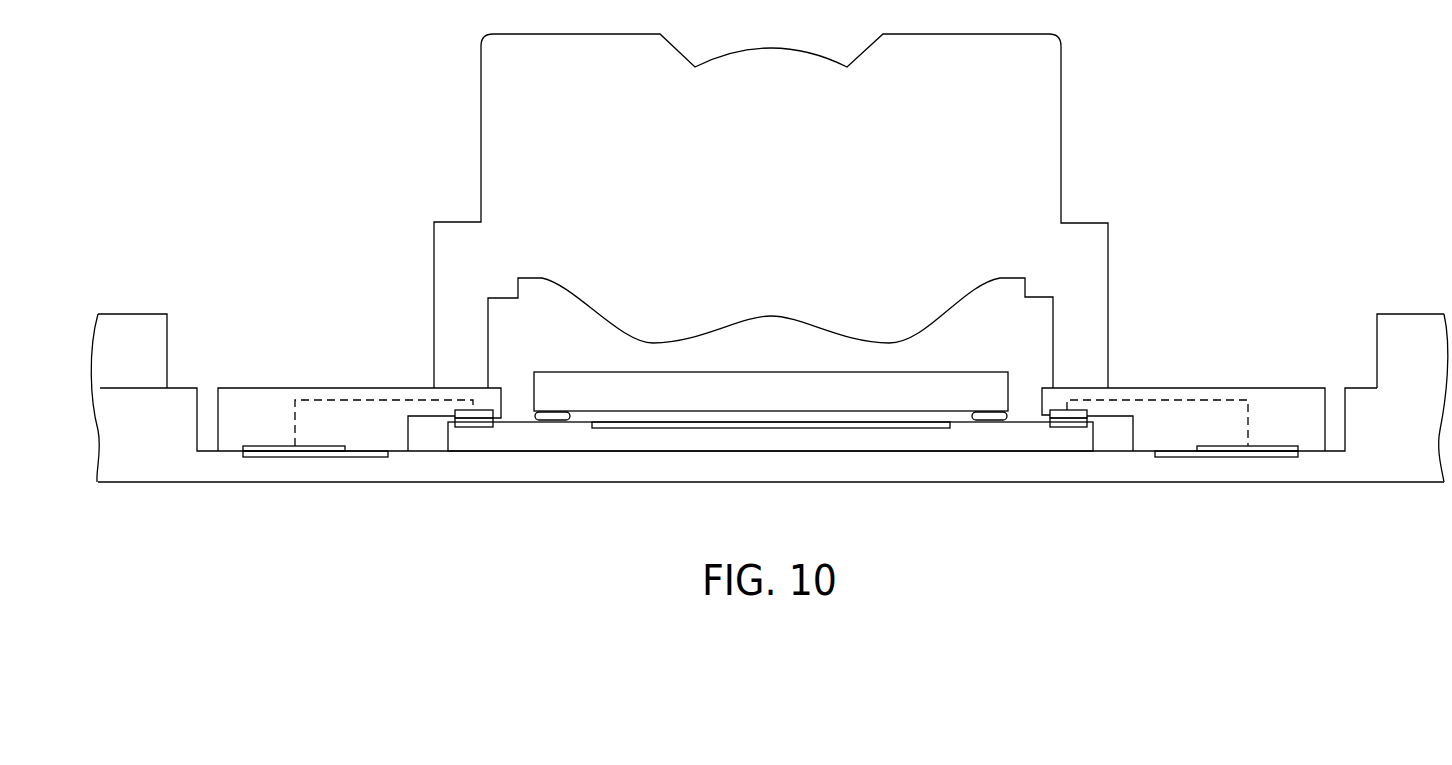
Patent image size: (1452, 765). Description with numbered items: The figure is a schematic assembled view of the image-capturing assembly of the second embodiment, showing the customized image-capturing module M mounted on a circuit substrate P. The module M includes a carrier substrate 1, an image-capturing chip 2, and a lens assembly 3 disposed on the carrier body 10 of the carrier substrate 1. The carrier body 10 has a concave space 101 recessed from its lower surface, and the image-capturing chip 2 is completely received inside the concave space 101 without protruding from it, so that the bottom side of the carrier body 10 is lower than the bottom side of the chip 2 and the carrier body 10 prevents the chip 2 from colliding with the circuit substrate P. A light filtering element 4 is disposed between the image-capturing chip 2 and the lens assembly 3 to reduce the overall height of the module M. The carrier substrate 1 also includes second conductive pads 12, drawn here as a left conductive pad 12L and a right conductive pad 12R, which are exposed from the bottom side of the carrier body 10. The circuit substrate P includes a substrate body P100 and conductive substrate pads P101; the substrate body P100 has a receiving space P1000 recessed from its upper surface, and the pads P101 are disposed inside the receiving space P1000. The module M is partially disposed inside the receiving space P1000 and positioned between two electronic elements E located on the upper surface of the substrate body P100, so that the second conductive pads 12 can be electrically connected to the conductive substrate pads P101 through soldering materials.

The customized image-capturing module M is at (1094, 101).
The lens assembly 3 is at (487, 146).
The light filtering element 4 is at (657, 380).
The concave space 101 is at (1108, 428).
The image-capturing chip 2 is at (452, 432).
The carrier substrate 1 is at (236, 396).
The carrier body 10 is at (1178, 392).
The second conductive pads 12 is at (802, 395).
The left second conductive pad 12L is at (268, 447).
The right second conductive pad 12R is at (1275, 447).
The conductive substrate pads P101 is at (327, 457).
The circuit substrate P is at (130, 481).
The substrate body P100 is at (900, 467).
The receiving space P1000 is at (1333, 415).
The electronic elements E is at (136, 320).